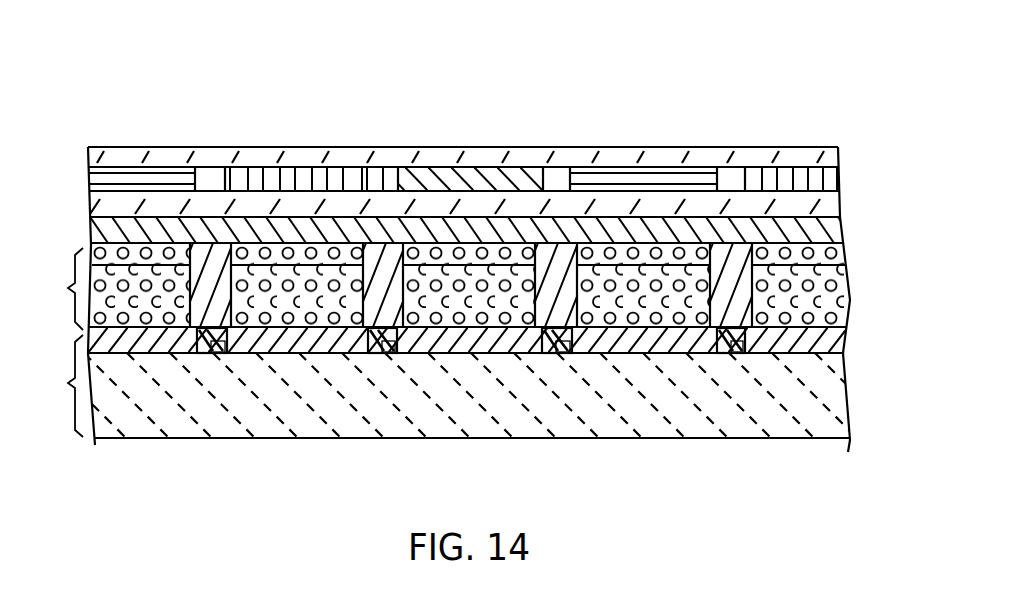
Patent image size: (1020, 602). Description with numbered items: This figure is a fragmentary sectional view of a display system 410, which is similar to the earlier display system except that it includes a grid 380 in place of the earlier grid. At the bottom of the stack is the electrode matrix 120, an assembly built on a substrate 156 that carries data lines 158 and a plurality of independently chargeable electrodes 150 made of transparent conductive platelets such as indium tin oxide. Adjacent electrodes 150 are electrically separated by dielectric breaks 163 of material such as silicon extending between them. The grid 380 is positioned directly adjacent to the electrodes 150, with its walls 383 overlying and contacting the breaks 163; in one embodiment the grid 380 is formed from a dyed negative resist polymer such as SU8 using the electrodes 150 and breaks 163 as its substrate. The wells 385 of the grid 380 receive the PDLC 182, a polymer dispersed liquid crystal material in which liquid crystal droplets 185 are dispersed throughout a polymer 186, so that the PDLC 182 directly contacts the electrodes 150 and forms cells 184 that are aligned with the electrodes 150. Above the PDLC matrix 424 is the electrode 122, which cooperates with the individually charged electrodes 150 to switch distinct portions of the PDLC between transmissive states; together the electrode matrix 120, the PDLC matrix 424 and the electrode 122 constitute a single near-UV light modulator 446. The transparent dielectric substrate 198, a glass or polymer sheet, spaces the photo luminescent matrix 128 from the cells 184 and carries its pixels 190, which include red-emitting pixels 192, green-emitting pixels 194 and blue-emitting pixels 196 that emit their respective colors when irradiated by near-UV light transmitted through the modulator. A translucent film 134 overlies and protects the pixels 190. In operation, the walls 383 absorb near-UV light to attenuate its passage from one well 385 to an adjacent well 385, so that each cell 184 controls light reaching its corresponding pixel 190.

The display system 410 is at (778, 106).
The film 134 is at (88, 150).
The photo luminescent matrix 128 is at (88, 178).
The transparent dielectric substrate 198 is at (88, 212).
The electrode 122 is at (92, 238).
The pixels 190 is at (290, 158).
The pixels 196 is at (148, 176).
The pixels 194 is at (350, 170).
The pixels 192 is at (523, 170).
The near-UV light modulator 446 is at (842, 212).
The PDLC matrix 424 is at (55, 289).
The PDLC 182 is at (838, 305).
The liquid crystal droplets 185 is at (840, 268).
The cells 184 is at (758, 268).
The electrodes 150 is at (827, 340).
The polymer 186 is at (840, 323).
The data lines 158 is at (205, 353).
The dielectric breaks 163 is at (240, 353).
The electrode matrix 120 is at (463, 386).
The wells 385 is at (127, 325).
The substrate 156 is at (712, 435).
The grid 380 is at (745, 297).
The walls 383 is at (722, 290).